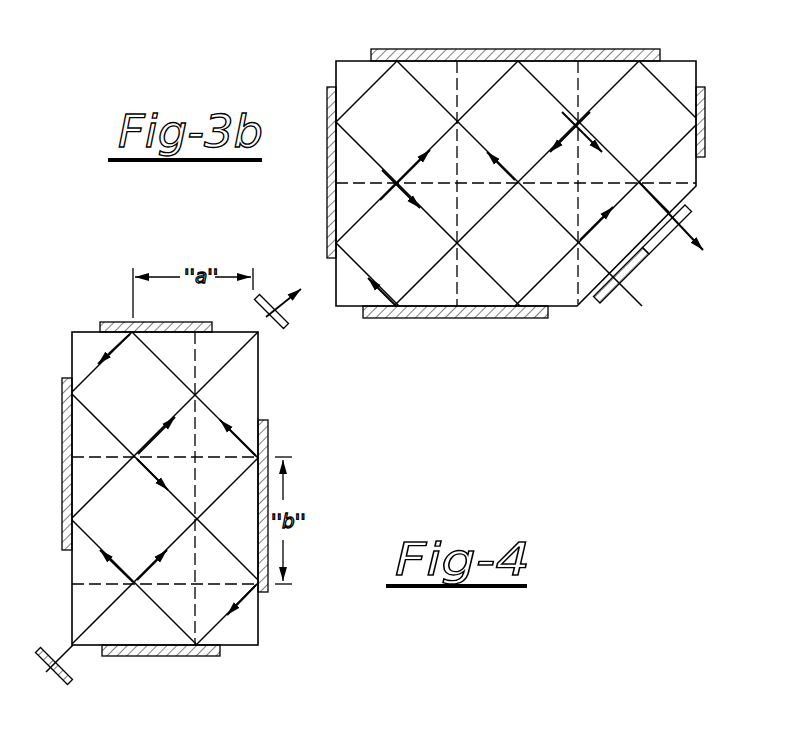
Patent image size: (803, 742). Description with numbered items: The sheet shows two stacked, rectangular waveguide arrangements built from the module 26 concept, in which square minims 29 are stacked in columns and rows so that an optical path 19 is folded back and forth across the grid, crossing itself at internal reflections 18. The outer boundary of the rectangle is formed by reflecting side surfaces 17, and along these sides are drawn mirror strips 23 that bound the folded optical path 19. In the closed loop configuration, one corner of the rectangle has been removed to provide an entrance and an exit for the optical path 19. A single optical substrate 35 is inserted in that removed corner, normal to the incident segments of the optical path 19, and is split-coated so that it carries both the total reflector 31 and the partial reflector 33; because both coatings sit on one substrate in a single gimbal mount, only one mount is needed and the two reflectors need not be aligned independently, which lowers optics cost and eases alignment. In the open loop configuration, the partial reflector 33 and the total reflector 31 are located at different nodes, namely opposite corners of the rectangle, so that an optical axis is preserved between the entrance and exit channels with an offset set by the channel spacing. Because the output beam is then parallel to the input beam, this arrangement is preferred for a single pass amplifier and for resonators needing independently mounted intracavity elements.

In FIG. 3B, the reflecting side surface 17 is at (518, 60).
In FIG. 3B, the internal reflection 18 is at (650, 100).
In FIG. 4, the internal reflection 18 is at (240, 298).
In FIG. 4, the optical path 19 is at (166, 622).
In FIG. 3B, the mirror strip 23 is at (600, 50).
In FIG. 4, the mirror strip 23 is at (108, 322).
In FIG. 4, the module 26 is at (88, 352).
In FIG. 4, the square minim 29 is at (80, 367).
In FIG. 3B, the total reflector 31 is at (612, 290).
In FIG. 4, the total reflector 31 is at (60, 682).
In FIG. 3B, the partial reflector 33 is at (660, 238).
In FIG. 4, the partial reflector 33 is at (258, 297).
In FIG. 3B, the single optical substrate 35 is at (640, 274).